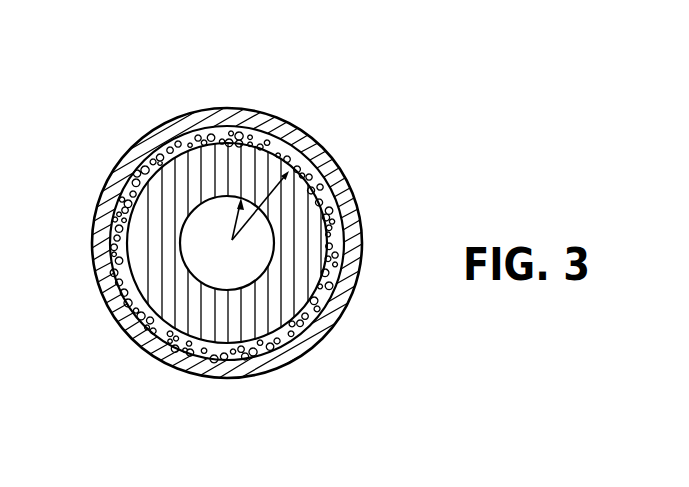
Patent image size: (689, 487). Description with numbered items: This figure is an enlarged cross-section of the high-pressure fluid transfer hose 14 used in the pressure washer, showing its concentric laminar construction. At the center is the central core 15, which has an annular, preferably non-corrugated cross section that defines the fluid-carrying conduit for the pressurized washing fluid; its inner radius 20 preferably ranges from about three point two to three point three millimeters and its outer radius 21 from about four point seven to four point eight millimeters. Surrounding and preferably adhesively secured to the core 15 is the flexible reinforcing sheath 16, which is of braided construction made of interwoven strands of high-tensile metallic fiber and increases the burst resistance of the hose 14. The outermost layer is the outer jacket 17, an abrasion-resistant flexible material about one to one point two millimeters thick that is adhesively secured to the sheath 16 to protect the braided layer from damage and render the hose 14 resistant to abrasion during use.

The high-pressure fluid transfer hose 14 is at (367, 180).
The central core 15 is at (165, 294).
The reinforcing sheath 16 is at (162, 332).
The outer jacket 17 is at (180, 357).
The inner radius 20 is at (232, 235).
The outer radius 21 is at (253, 138).